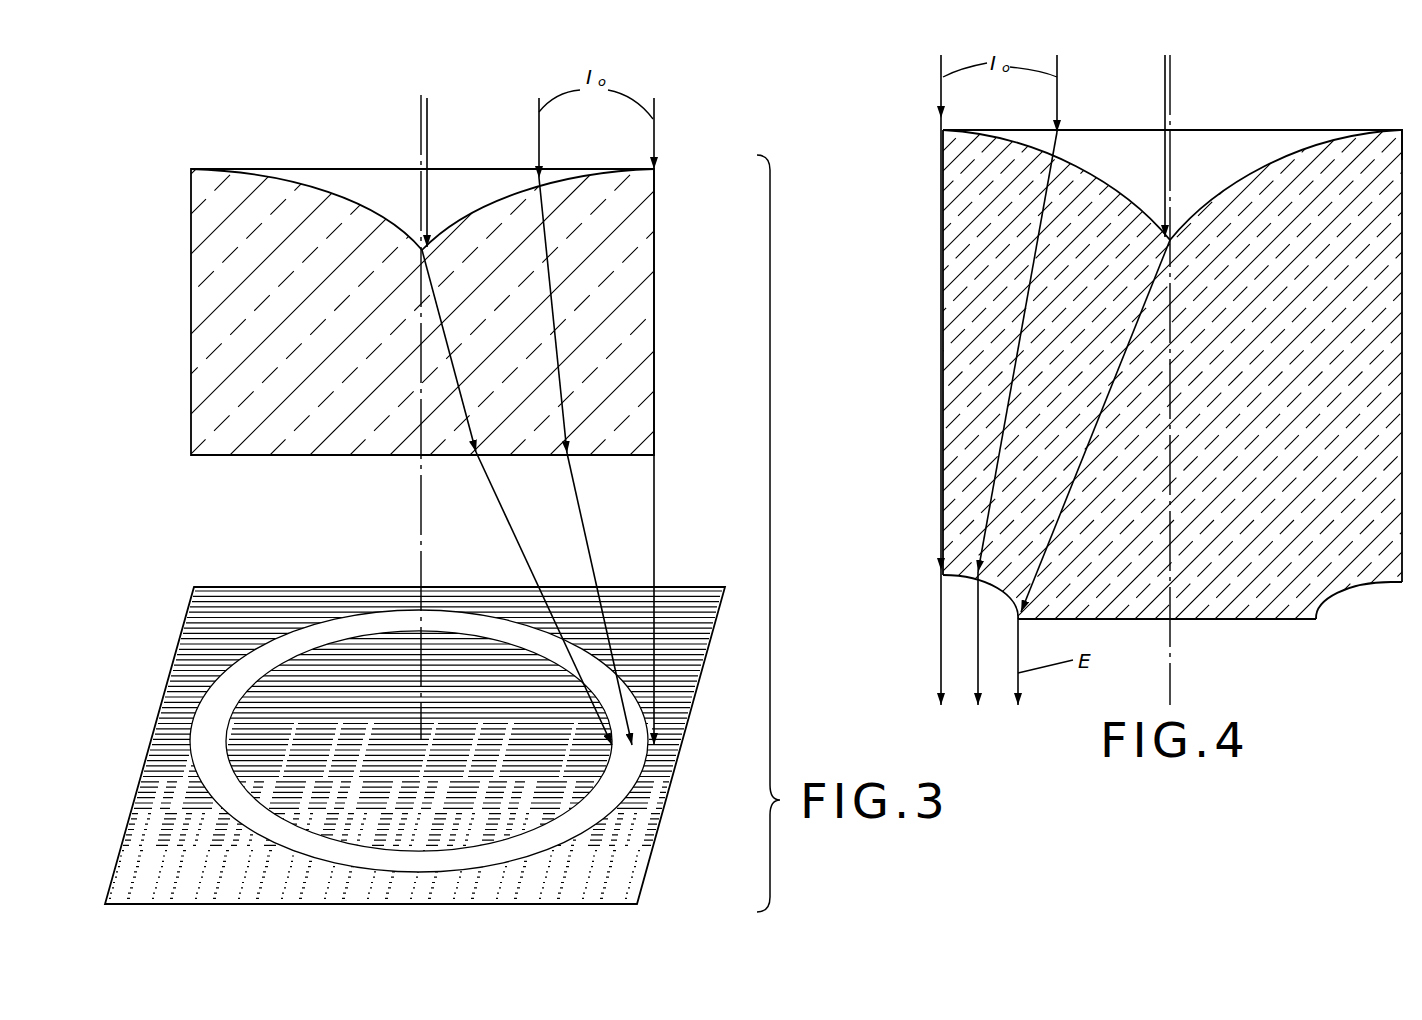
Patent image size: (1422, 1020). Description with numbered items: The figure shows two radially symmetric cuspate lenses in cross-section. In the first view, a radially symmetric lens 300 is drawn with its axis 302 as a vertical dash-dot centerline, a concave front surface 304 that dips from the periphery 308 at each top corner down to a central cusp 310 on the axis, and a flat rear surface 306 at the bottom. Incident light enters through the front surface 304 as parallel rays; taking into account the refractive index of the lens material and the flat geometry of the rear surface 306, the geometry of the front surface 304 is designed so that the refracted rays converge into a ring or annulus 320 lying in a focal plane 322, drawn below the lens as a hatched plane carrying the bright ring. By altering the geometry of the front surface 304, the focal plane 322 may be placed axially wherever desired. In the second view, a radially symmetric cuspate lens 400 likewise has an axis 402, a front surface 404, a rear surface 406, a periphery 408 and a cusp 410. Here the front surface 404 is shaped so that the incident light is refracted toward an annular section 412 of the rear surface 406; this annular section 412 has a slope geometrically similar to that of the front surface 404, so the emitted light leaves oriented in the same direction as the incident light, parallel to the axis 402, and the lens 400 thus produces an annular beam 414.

In FIG. 3, the radially symmetric lens 300 is at (183, 310).
In FIG. 3, the axis 302 is at (420, 121).
In FIG. 3, the front surface 304 is at (503, 198).
In FIG. 3, the rear surface 306 is at (318, 456).
In FIG. 3, the periphery 308 is at (191, 168).
In FIG. 3, the cusp 310 is at (420, 247).
In FIG. 3, the ring or annulus 320 is at (210, 737).
In FIG. 3, the focal plane 322 is at (215, 618).
In FIG. 4, the radially symmetric cuspate lens 400 is at (930, 245).
In FIG. 4, the axis 402 is at (1169, 668).
In FIG. 4, the front surface 404 is at (1286, 152).
In FIG. 4, the rear surface 406 is at (1280, 624).
In FIG. 4, the periphery 408 is at (1403, 128).
In FIG. 4, the cusp 410 is at (1173, 245).
In FIG. 4, the annular section 412 is at (1357, 595).
In FIG. 4, the annular beam 414 is at (990, 660).